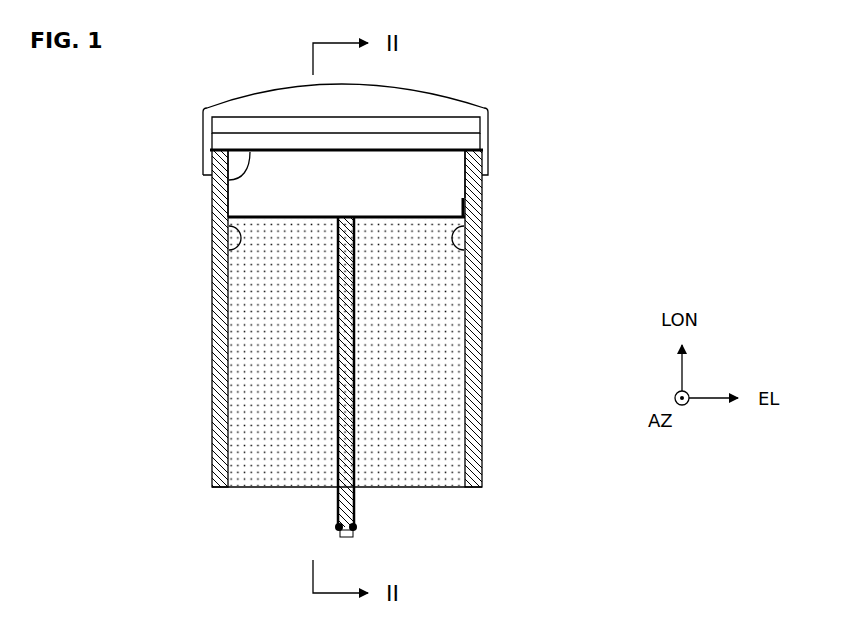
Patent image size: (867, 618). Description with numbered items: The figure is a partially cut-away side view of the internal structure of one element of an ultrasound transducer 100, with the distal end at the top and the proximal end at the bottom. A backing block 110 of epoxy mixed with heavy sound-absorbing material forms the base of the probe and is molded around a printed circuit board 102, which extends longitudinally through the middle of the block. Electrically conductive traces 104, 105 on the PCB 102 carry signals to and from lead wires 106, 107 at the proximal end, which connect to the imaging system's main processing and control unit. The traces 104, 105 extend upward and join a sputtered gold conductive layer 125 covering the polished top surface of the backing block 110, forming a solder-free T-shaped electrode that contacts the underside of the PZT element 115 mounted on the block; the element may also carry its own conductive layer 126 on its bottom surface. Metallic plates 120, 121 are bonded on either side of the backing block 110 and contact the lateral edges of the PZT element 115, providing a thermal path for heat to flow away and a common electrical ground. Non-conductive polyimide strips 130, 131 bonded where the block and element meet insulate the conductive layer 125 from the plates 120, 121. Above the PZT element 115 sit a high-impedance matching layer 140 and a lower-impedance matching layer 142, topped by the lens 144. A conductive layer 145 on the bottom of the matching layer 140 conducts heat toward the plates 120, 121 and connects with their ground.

The transducer 100 is at (616, 207).
The printed circuit board 102 is at (345, 534).
The electrically conductive trace 104 is at (344, 379).
The electrically conductive trace 105 is at (378, 440).
The lead wire 106 is at (336, 524).
The lead wire 107 is at (356, 524).
The backing block 110 is at (440, 472).
The PZT element 115 is at (432, 192).
The metallic plate 120 is at (218, 337).
The metallic plate 121 is at (472, 302).
The conductive layer 125 is at (270, 216).
The conductive layer 126 is at (288, 218).
The non-conductive strip 130 is at (235, 252).
The non-conductive strip 131 is at (460, 258).
The high-impedance matching layer 140 is at (467, 141).
The lower-impedance matching layer 142 is at (466, 124).
The lens 144 is at (395, 102).
The conductive layer 145 is at (227, 183).